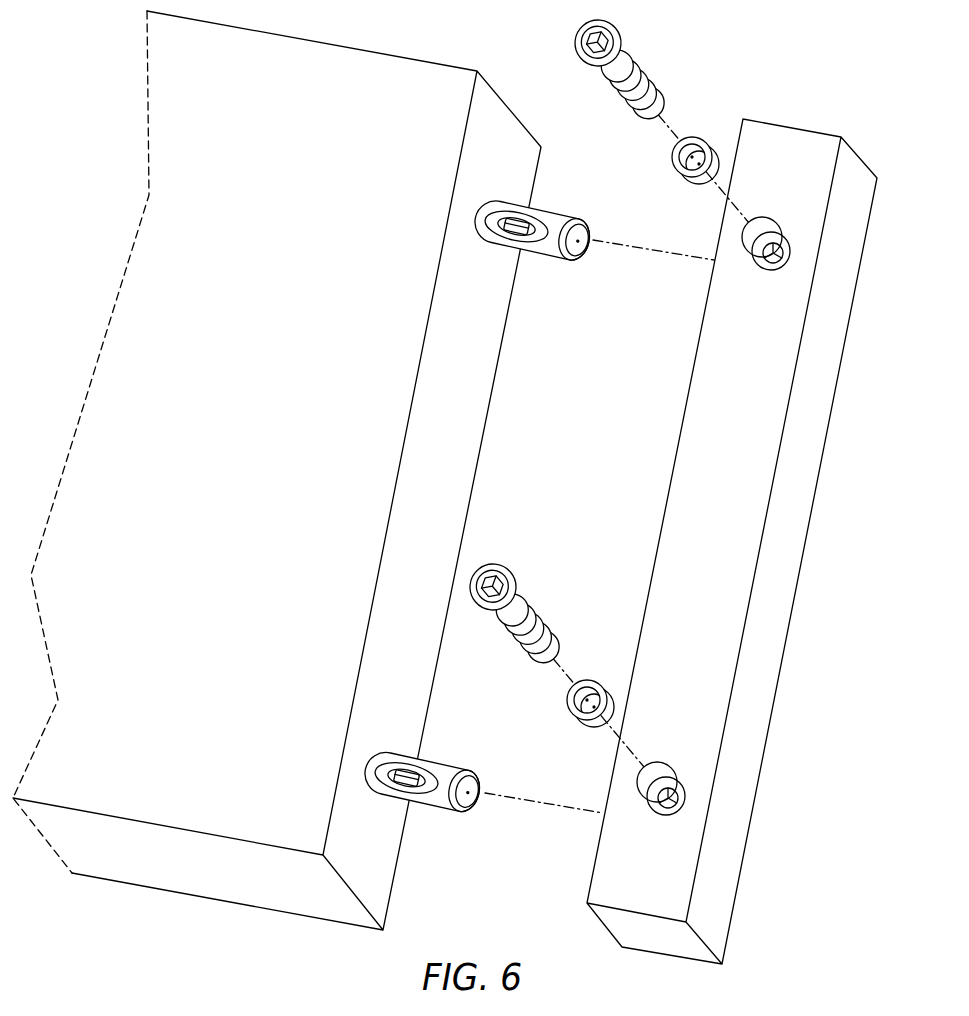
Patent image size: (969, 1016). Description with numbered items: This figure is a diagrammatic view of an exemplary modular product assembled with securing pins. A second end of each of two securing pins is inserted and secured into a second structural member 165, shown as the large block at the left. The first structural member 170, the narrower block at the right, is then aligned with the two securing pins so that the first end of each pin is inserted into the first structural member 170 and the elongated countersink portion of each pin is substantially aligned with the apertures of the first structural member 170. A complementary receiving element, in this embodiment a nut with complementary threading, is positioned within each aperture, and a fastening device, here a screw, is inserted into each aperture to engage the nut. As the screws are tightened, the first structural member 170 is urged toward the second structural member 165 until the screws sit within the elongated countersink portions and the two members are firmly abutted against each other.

The second structural member 165 is at (400, 56).
The first structural member 170 is at (813, 130).